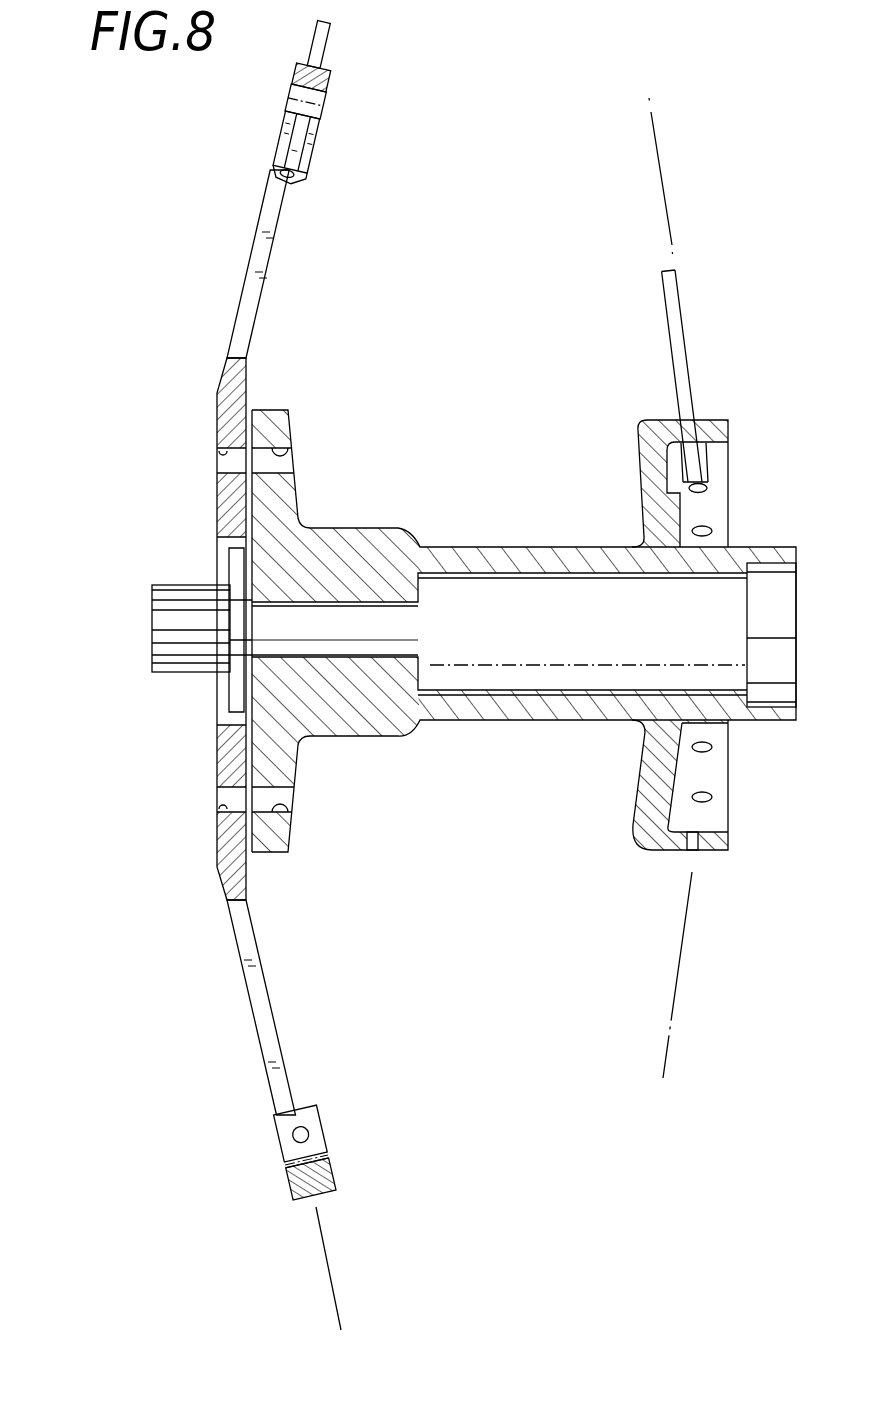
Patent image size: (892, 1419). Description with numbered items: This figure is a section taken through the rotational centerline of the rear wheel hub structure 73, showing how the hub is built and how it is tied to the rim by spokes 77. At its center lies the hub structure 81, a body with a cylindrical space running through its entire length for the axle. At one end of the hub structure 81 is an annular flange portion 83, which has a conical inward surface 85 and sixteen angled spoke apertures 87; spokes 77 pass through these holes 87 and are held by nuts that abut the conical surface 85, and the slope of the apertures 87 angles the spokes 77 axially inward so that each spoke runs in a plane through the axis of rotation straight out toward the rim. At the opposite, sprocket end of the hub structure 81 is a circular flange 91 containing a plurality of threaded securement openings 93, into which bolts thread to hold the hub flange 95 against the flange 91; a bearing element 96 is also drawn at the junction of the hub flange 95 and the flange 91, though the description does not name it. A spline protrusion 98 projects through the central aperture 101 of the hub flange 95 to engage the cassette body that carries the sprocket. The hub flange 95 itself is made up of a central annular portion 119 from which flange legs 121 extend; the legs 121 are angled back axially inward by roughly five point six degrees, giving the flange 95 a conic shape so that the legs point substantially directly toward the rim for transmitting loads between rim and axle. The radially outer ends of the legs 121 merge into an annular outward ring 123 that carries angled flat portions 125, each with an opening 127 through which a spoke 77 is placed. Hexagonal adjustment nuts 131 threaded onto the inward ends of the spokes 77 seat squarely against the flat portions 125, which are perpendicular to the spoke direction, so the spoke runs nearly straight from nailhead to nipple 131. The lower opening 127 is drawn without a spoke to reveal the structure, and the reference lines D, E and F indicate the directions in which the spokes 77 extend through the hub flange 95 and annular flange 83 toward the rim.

The hub structure 73 is at (537, 378).
The spokes 77 is at (321, 48).
The hub structure 81 is at (364, 545).
The annular flange portion 83 is at (637, 428).
The conical inward surface 85 is at (730, 447).
The spoke apertures 87 is at (708, 490).
The circular flange 91 is at (280, 424).
The threaded securement openings 93 is at (290, 462).
The hub flange 95 is at (240, 314).
The bearing 96 is at (229, 462).
The spline protrusion 98 is at (166, 621).
The central aperture 101 is at (231, 721).
The central annular portion 119 is at (228, 508).
The flange legs 121 is at (211, 642).
The annular outward ring 123 is at (326, 82).
The angled flat portions 125 is at (290, 107).
The openings 127 is at (307, 1135).
The hexagonal adjustment nuts 131 is at (316, 147).
The axis D is at (661, 175).
The axis E is at (678, 985).
The axis F is at (346, 1242).